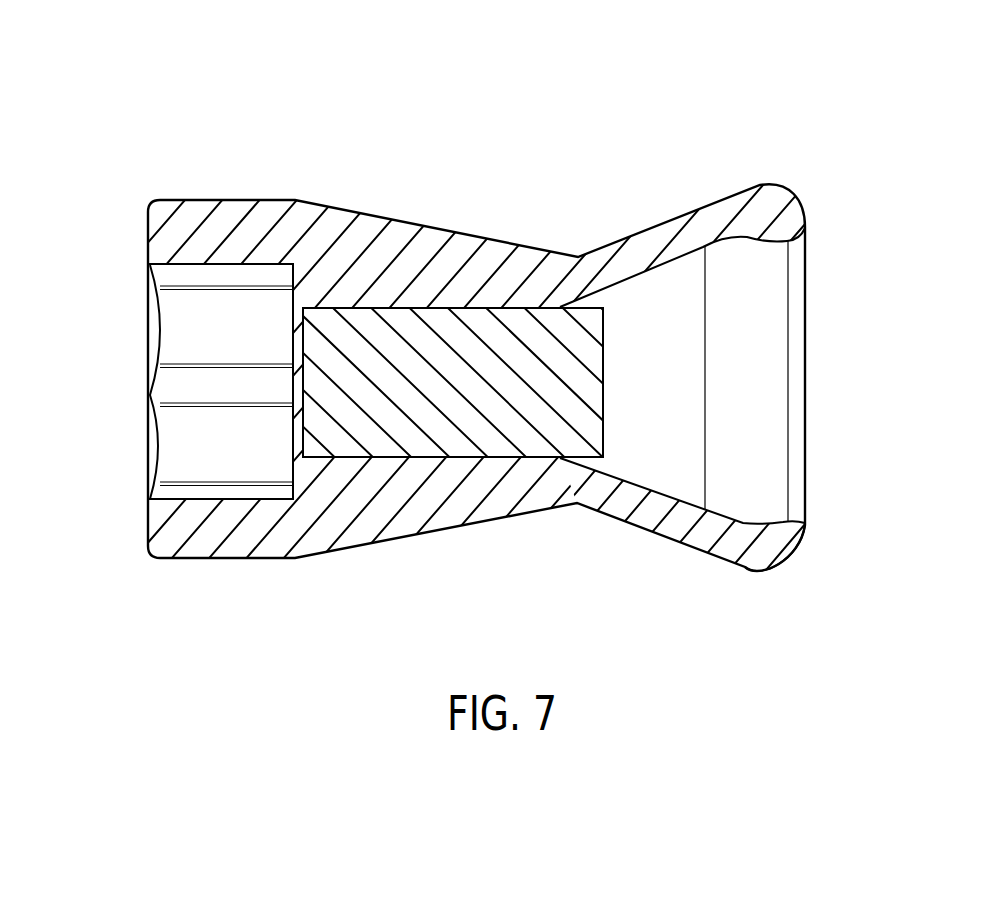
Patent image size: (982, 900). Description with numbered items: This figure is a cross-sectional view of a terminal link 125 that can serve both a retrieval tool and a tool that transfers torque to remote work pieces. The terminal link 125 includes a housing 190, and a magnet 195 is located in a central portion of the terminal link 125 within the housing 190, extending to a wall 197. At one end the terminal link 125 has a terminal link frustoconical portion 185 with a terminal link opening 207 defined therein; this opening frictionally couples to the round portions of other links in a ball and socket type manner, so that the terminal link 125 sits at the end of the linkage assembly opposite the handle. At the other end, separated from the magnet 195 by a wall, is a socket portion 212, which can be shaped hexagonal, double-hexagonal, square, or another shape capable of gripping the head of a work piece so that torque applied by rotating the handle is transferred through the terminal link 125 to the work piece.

The terminal link 125 is at (110, 104).
The terminal link frustoconical portion 185 is at (793, 541).
The housing 190 is at (443, 517).
The magnet 195 is at (472, 340).
The wall 197 is at (298, 453).
The terminal link opening 207 is at (798, 388).
The socket portion 212 is at (167, 440).